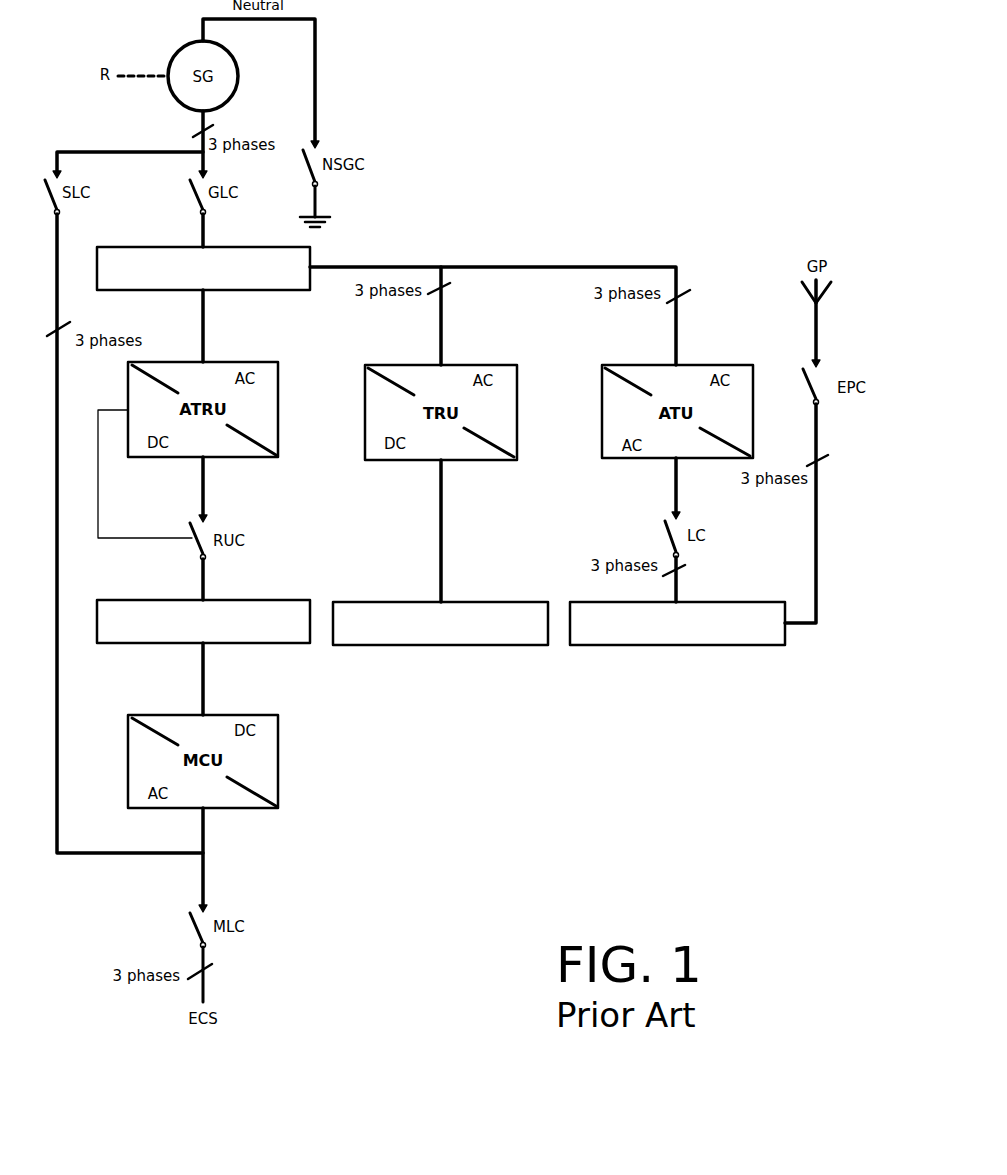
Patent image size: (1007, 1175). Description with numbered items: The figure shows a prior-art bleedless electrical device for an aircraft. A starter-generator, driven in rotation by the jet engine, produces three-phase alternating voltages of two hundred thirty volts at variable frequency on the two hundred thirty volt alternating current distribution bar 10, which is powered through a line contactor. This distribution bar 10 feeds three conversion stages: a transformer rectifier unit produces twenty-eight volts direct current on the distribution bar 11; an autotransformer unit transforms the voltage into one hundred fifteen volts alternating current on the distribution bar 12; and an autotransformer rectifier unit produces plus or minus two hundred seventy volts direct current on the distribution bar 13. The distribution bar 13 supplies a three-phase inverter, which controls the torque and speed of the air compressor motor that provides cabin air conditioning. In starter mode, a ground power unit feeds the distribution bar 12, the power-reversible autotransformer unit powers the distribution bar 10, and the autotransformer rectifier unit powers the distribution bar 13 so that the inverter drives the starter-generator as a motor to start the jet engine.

The 230-volt AC distribution bar 10 is at (250, 247).
The 28 DC volt distribution bar 11 is at (498, 602).
The 115 AC volt distribution bar 12 is at (742, 602).
The +/-270 DC volt distribution bar 13 is at (260, 600).